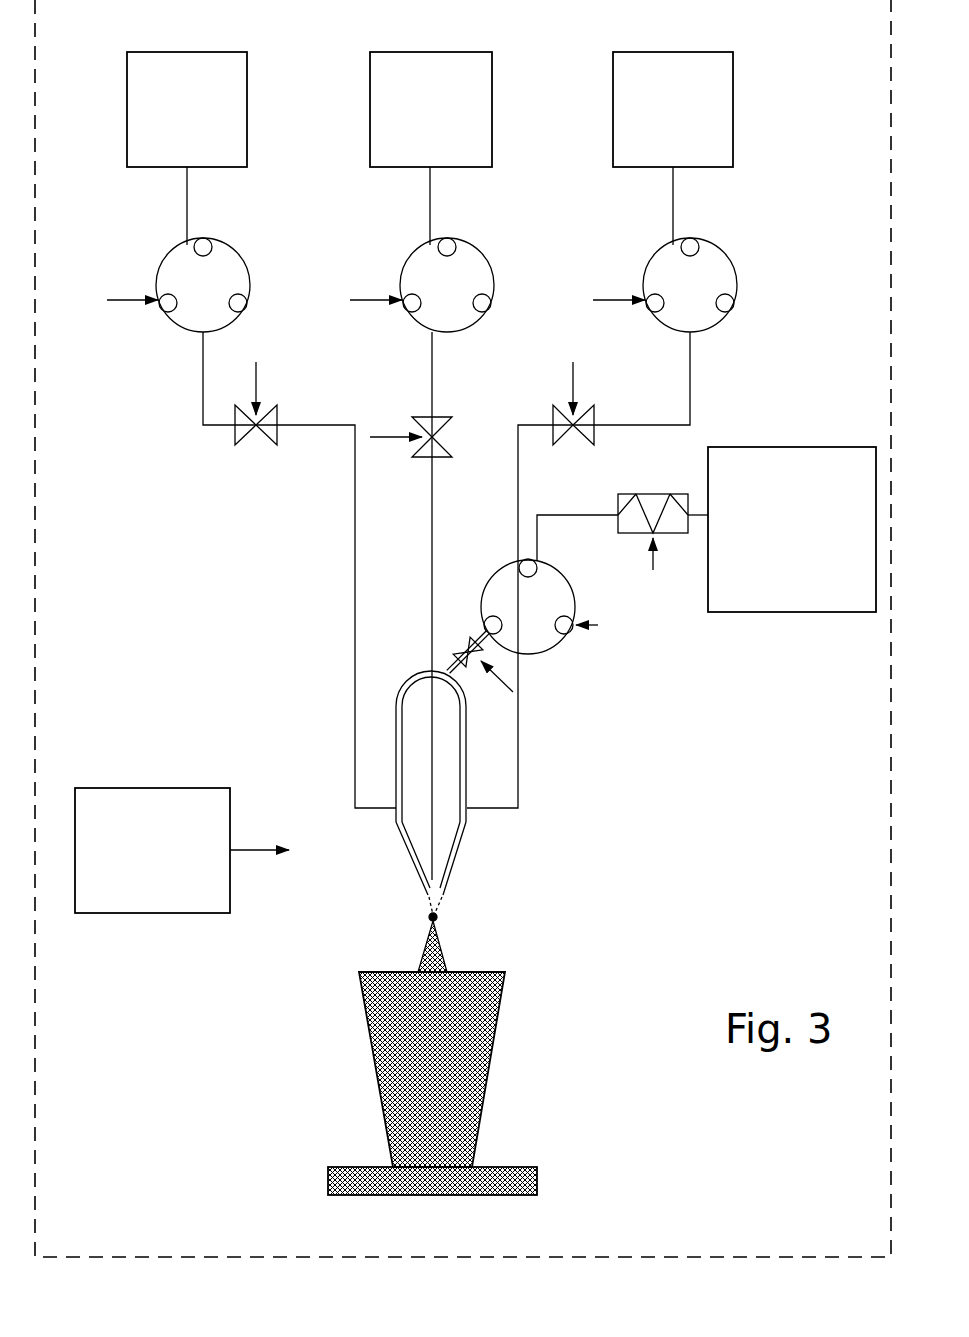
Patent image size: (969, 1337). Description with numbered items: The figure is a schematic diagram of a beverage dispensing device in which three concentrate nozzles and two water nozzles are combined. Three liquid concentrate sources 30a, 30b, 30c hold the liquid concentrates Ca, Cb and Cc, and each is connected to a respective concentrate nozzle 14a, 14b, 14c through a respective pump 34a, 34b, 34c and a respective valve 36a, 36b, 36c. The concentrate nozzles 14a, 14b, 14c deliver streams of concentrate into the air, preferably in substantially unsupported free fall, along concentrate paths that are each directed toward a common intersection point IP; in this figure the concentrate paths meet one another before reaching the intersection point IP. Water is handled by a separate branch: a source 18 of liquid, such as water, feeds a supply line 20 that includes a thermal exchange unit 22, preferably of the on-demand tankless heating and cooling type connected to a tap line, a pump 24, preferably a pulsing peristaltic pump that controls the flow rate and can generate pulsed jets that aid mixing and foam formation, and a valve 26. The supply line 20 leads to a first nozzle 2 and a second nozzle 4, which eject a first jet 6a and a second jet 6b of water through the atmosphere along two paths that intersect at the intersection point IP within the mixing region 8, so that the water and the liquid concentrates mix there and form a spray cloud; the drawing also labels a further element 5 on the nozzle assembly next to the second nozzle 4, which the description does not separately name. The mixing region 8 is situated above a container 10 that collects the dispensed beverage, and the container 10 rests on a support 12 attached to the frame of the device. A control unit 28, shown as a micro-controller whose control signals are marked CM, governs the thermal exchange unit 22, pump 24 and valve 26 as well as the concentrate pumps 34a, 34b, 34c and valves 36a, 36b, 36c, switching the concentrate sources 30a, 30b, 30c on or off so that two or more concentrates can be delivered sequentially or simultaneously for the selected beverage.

The liquid concentrate source 30a is at (126, 84).
The liquid concentrate source 30b is at (369, 84).
The liquid concentrate source 30c is at (612, 84).
The pump 34a is at (167, 248).
The pump 34b is at (411, 248).
The pump 34c is at (654, 248).
The valve 36a is at (257, 449).
The valve 36b is at (448, 437).
The valve 36c is at (570, 406).
The concentrate nozzle 14a is at (423, 838).
The concentrate nozzle 14b is at (430, 820).
The concentrate nozzle 14c is at (460, 846).
The thermal exchange unit 22 is at (653, 489).
The supply line 20 is at (566, 530).
The source of liquid 18 is at (766, 618).
The pump 24 is at (566, 650).
The valve 26 is at (458, 648).
The control unit 28 is at (140, 802).
The first nozzle 2 is at (435, 796).
The second nozzle 4 is at (458, 852).
The inner tube 5 is at (442, 862).
The first jet 6a is at (425, 895).
The second jet 6b is at (442, 895).
The mixing region 8 is at (416, 915).
The intersection point IP is at (440, 920).
The container 10 is at (375, 1072).
The support 12 is at (328, 1181).